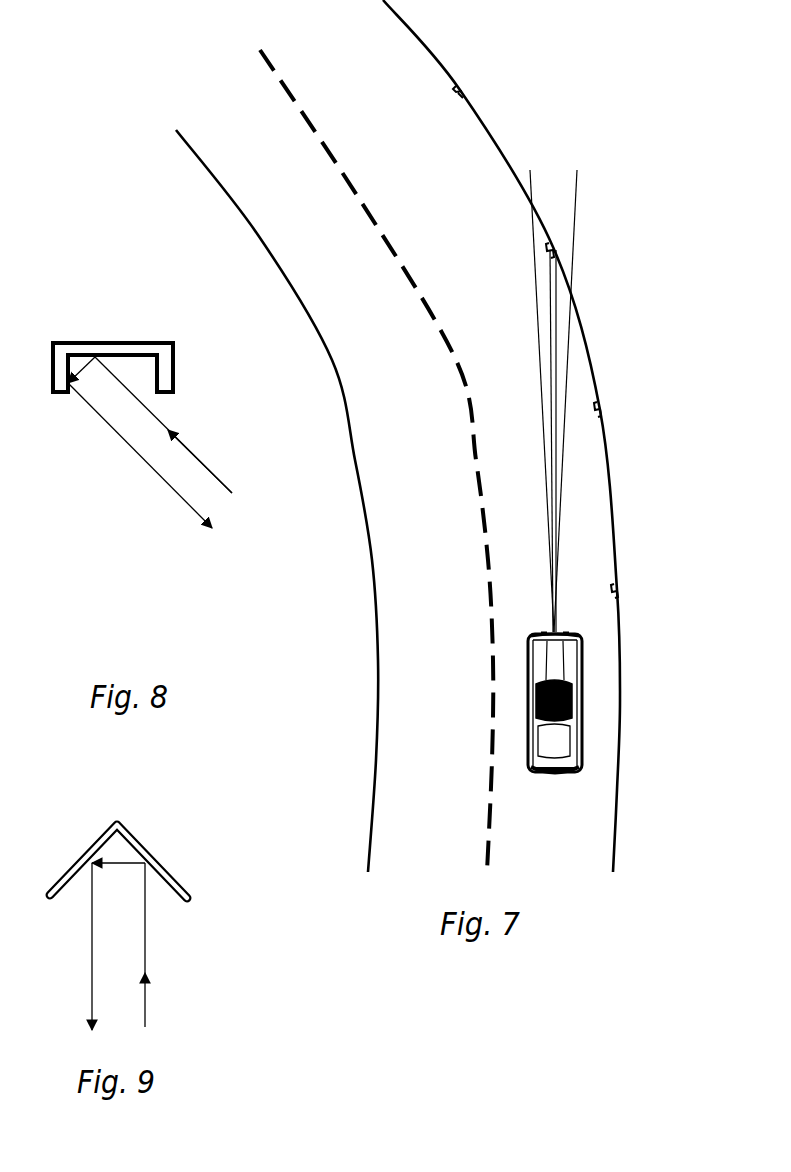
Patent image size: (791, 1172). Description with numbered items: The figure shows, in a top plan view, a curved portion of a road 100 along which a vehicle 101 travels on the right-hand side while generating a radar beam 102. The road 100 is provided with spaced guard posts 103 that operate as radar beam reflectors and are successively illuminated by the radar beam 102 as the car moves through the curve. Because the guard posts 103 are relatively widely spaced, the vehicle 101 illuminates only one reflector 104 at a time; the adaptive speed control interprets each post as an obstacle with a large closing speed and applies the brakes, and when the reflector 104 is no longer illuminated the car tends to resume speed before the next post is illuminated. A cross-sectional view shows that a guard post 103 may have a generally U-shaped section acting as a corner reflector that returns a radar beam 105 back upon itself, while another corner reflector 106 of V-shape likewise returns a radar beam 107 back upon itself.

In FIG. 7, the road 100 is at (374, 78).
In FIG. 7, the vehicle 101 is at (583, 705).
In FIG. 7, the radar beam 102 is at (576, 233).
In FIG. 7, the guard posts 103 is at (602, 409).
In FIG. 8, the guard posts 103 is at (110, 334).
In FIG. 7, the reflector 104 is at (555, 245).
In FIG. 8, the radar beam 105 is at (155, 472).
In FIG. 9, the corner reflector 106 is at (146, 842).
In FIG. 9, the radar beam 107 is at (147, 946).